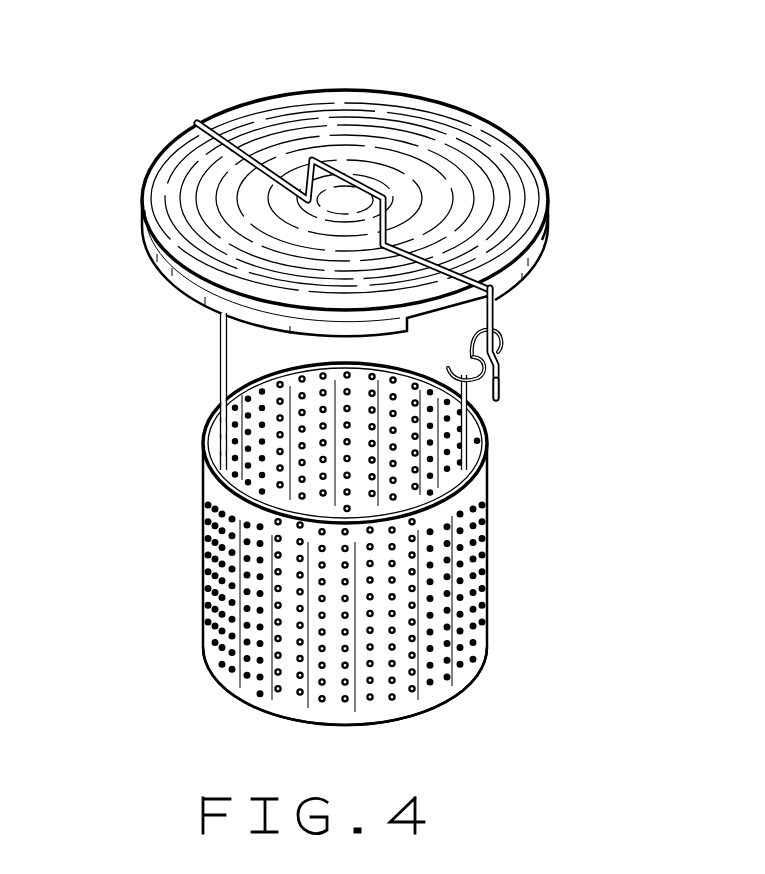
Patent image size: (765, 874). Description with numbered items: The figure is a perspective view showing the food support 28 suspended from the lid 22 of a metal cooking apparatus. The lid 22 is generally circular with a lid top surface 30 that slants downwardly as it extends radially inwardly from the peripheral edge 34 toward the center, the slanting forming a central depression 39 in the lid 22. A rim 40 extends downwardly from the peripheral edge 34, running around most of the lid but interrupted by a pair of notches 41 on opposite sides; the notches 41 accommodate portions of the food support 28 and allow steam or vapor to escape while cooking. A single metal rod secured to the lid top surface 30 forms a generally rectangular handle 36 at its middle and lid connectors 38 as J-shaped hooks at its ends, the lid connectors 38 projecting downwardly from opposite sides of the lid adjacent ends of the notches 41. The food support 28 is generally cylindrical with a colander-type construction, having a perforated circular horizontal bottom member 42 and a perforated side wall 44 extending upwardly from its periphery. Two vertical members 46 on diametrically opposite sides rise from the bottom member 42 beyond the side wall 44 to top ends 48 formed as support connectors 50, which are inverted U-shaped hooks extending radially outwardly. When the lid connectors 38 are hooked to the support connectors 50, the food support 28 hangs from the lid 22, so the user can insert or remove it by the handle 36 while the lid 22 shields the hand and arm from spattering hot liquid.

The lid 22 is at (472, 128).
The food support 28 is at (470, 520).
The lid top surface 30 is at (407, 100).
The peripheral edge 34 is at (530, 153).
The handle 36 is at (324, 152).
The lid connectors 38 is at (495, 345).
The central depression 39 is at (335, 212).
The rim 40 is at (545, 240).
The notches 41 is at (238, 108).
The horizontal bottom member 42 is at (457, 695).
The perforated side wall 44 is at (478, 575).
The vertical members 46 is at (220, 378).
The top ends 48 is at (493, 330).
The support connectors 50 is at (493, 392).